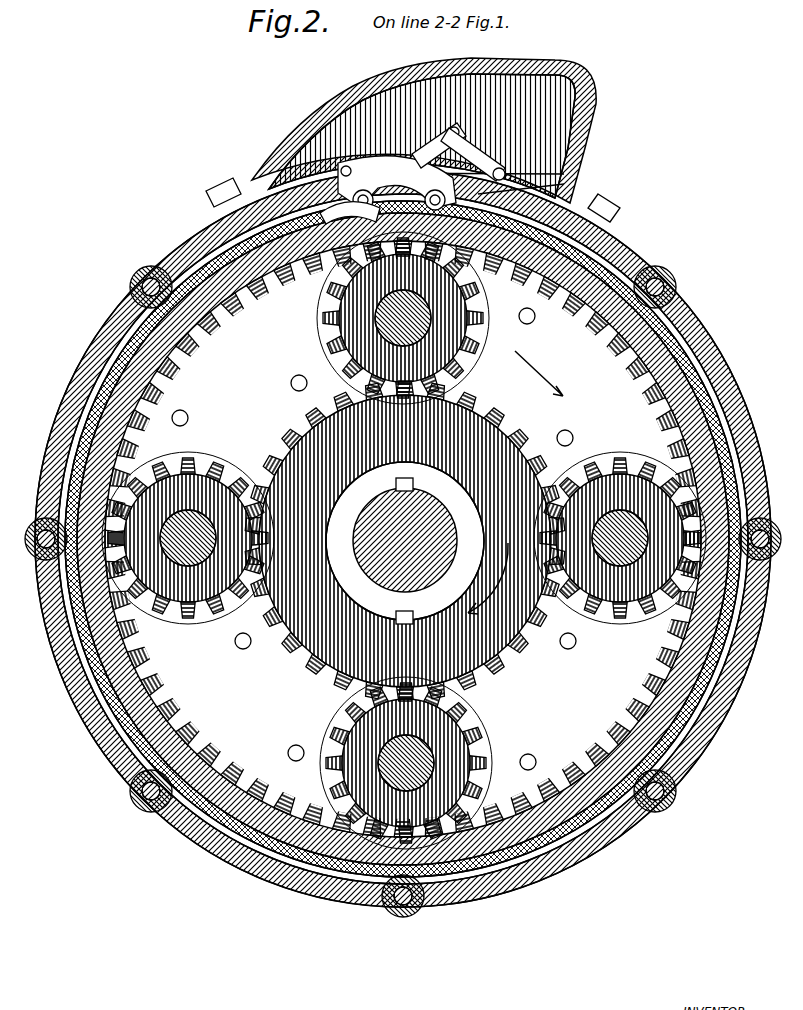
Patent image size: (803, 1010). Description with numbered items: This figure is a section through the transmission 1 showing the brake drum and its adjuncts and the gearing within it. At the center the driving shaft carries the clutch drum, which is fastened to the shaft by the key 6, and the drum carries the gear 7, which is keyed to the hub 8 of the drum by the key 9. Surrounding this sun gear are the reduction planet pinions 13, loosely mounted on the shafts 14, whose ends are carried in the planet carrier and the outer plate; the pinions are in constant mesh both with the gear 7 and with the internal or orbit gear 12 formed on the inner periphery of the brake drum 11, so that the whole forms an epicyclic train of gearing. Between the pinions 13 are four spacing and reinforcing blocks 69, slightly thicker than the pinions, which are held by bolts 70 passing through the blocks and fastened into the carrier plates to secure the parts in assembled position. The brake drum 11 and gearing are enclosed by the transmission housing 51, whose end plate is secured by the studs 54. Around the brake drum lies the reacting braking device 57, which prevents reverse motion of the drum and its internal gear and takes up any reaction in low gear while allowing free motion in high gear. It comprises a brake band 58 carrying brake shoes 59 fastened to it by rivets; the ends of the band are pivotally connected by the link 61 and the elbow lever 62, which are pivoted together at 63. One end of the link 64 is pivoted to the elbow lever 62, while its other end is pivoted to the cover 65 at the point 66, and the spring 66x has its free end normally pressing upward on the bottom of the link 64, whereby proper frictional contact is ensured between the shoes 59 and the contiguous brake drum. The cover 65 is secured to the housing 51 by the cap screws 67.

The transmission 1 is at (403, 539).
The key 6 is at (404, 471).
The gear 7 is at (405, 540).
The hub 8 is at (462, 514).
The key 9 is at (419, 520).
The brake drum 11 is at (703, 760).
The internal or orbit gear 12 is at (655, 692).
The reduction planet pinions 13 is at (404, 540).
The shafts 14 is at (404, 540).
The transmission housing 51 is at (103, 307).
The studs 54 is at (144, 266).
The reacting braking device 57 is at (492, 125).
The brake band 58 is at (470, 875).
The brake shoes 59 is at (98, 696).
The link 61 is at (397, 179).
The elbow lever 62 is at (414, 128).
The pivot 63 is at (339, 191).
The link 64 is at (480, 153).
The cover 65 is at (576, 62).
The pivot point 66 is at (556, 166).
The spring 66x is at (556, 176).
The cap screws 67 is at (213, 180).
The spacing and reinforcing blocks 69 is at (404, 540).
The bolts 70 is at (283, 377).